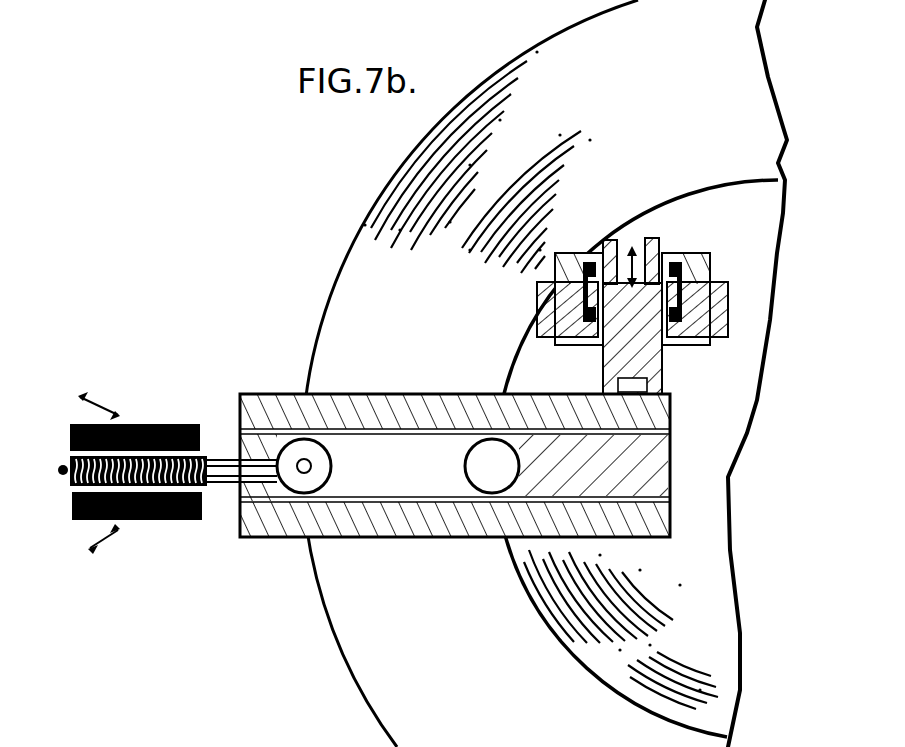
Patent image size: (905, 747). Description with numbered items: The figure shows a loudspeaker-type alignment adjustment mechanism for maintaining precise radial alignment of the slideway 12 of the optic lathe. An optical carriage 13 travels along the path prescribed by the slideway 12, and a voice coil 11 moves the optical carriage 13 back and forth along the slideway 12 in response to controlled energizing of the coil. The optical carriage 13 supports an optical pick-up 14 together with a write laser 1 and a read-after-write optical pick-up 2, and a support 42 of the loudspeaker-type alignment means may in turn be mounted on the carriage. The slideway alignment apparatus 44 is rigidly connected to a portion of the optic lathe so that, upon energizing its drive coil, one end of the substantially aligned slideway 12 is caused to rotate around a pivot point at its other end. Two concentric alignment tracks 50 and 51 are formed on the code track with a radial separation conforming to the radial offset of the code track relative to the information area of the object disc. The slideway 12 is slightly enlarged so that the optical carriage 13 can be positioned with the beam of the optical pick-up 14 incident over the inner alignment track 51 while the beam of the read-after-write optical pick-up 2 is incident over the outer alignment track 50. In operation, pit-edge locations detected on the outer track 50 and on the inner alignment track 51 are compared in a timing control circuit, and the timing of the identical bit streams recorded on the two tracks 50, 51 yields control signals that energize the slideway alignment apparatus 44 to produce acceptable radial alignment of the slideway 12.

The write laser 1 is at (547, 536).
The read-after-write optical pick-up 2 is at (492, 537).
The voice coil 11 is at (180, 521).
The slideway 12 is at (651, 537).
The optical carriage 13 is at (418, 537).
The optical pick-up 14 is at (330, 462).
The support 42 is at (60, 476).
The slideway alignment apparatus 44 is at (728, 300).
The outer alignment track 50 is at (470, 373).
The inner alignment track 51 is at (672, 721).